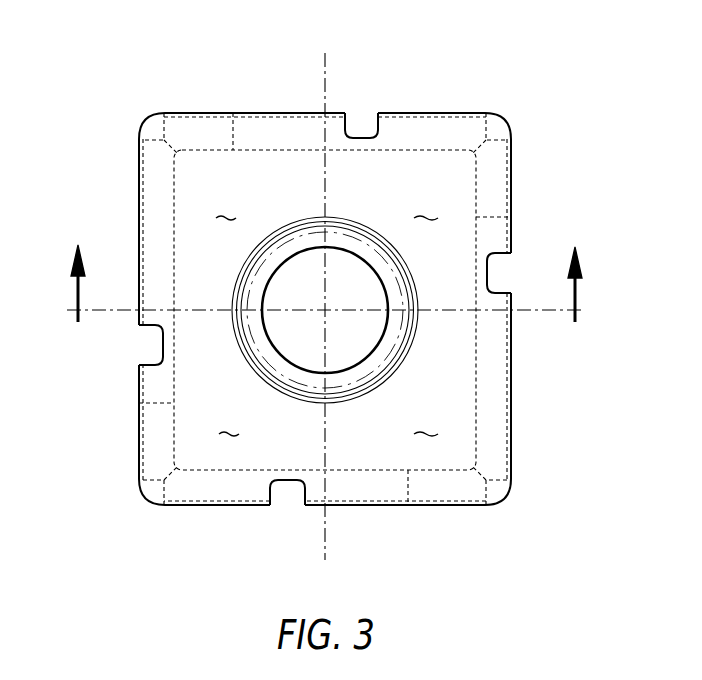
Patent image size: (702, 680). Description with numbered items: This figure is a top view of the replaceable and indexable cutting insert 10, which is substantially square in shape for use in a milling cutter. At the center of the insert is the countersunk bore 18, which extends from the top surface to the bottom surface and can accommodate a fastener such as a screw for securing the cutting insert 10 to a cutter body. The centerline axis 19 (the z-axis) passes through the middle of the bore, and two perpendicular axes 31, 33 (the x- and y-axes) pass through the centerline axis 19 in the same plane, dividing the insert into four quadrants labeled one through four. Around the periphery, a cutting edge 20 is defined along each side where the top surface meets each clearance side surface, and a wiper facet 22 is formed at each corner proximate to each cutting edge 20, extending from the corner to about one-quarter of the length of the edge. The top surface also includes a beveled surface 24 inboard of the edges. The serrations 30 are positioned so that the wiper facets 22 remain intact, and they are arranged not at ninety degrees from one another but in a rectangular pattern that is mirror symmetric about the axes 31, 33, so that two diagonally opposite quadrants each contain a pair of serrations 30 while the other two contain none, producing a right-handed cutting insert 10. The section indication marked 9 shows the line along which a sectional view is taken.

The cutting insert 10 is at (48, 66).
The countersunk bore 18 is at (286, 262).
The centerline axis 19 is at (330, 305).
The cutting edge 20 is at (417, 113).
The wiper facet 22 is at (210, 130).
The beveled surface 24 is at (460, 125).
The serrations 30 is at (355, 132).
The axis 31 is at (323, 62).
The axis 33 is at (537, 312).
The section line 9- 9 is at (323, 286).